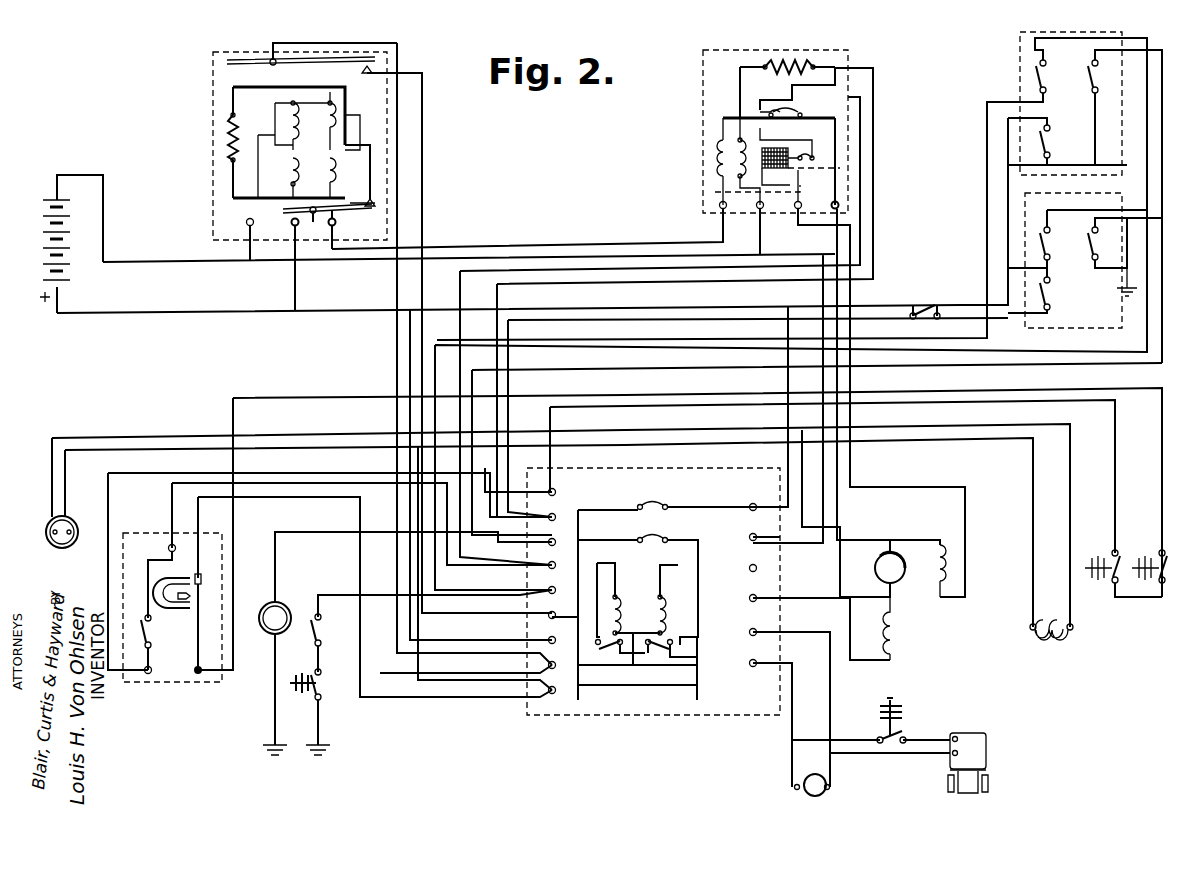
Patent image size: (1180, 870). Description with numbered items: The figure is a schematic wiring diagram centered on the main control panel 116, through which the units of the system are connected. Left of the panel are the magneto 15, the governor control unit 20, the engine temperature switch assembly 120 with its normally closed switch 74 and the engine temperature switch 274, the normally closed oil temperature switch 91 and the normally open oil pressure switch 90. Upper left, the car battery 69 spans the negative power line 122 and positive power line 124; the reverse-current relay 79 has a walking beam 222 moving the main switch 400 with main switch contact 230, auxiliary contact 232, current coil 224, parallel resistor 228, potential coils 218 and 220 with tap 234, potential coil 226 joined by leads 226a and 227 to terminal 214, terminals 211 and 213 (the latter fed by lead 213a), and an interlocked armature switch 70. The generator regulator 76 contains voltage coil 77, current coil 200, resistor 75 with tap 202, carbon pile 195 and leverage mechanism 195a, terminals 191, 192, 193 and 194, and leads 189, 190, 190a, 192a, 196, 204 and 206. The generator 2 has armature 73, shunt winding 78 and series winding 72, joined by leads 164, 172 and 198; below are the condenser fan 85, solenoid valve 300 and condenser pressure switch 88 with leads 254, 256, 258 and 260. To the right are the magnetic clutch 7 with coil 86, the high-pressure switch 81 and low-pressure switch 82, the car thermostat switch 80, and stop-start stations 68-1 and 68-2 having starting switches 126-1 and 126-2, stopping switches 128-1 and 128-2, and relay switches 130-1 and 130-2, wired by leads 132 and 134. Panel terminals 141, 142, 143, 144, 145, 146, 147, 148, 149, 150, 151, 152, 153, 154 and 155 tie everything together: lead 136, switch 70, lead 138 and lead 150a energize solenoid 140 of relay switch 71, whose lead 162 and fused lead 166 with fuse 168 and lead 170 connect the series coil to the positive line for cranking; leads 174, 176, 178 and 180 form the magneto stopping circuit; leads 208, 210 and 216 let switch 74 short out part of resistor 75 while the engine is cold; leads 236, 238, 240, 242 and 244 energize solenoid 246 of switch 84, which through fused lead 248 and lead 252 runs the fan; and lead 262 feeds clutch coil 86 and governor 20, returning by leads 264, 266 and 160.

The generator 2 is at (936, 616).
The magnetic clutch 7 is at (1082, 644).
The magneto 15 is at (280, 602).
The governor control unit 20 is at (73, 520).
The stop-start station 68-1 is at (1012, 72).
The stop-start station 68-2 is at (1015, 218).
The car battery 69 is at (41, 188).
The armature switch 70 is at (335, 71).
The relay switch 71 is at (605, 640).
The series winding 72 is at (896, 630).
The armature 73 is at (897, 563).
The normally closed switch 74 is at (150, 630).
The resistor 75 is at (795, 62).
The generator regulator 76 is at (695, 112).
The voltage coil 77 is at (715, 126).
The shunt winding 78 is at (950, 565).
The reverse-current relay 79 is at (203, 116).
The car thermostat switch 80 is at (918, 312).
The high-pressure switch 81 is at (1110, 552).
The low-pressure switch 82 is at (1158, 552).
The switch 84 is at (672, 636).
The condenser fan 85 is at (783, 773).
The coil 86 is at (1048, 636).
The condenser pressure switch 88 is at (905, 738).
The oil pressure switch 90 is at (312, 672).
The oil temperature switch 91 is at (314, 620).
The main control panel 116 is at (550, 726).
The engine temperature switch assembly 120 is at (150, 683).
The negative power line 122 is at (180, 263).
The positive power line 124 is at (178, 314).
The starting switch 126-1 is at (1048, 75).
The starting switch 126-2 is at (1040, 242).
The stopping switch 128-1 is at (1050, 145).
The stopping switch 128-2 is at (1050, 293).
The relay switch 130-1 is at (1095, 75).
The relay switch 130-2 is at (1095, 245).
The lead 132 is at (990, 122).
The lead 134 is at (410, 352).
The lead 136 is at (397, 61).
The lead 138 is at (422, 95).
The solenoid 140 is at (618, 600).
The terminal 141 is at (753, 504).
The terminal 142 is at (752, 534).
The panel terminal 143 is at (752, 566).
The terminal 144 is at (761, 589).
The terminal 145 is at (751, 624).
The terminal 146 is at (766, 654).
The terminal 147 is at (556, 693).
The terminal 148 is at (566, 658).
The terminal 149 is at (566, 633).
The terminal 150 is at (541, 622).
The lead 150a is at (600, 566).
The terminal 151 is at (566, 597).
The terminal 152 is at (566, 573).
The terminal 153 is at (566, 549).
The terminal 154 is at (566, 525).
The terminal 155 is at (557, 492).
The lead 160 is at (722, 540).
The lead 162 is at (579, 672).
The lead 164 is at (757, 596).
The lead 166 is at (615, 508).
The fuse 168 is at (657, 504).
The lead 170 is at (787, 450).
The lead 172 is at (856, 538).
The lead 174 is at (332, 592).
The lead 176 is at (633, 340).
The lead 178 is at (1115, 365).
The lead 180 is at (278, 565).
The lead 189 is at (798, 228).
The fused lead 190 is at (798, 110).
The lead 190a is at (760, 130).
The regulator terminal 191 is at (727, 203).
The terminal 192 is at (763, 204).
The conductor 192a is at (780, 252).
The current regulator terminal 193 is at (828, 200).
The terminal 194 is at (768, 179).
The variable resistance carbon pile 195 is at (778, 152).
The leverage mechanism 195a is at (848, 162).
The lead 196 is at (838, 220).
The lead 198 is at (880, 578).
The current coil 200 is at (735, 150).
The tap 202 is at (795, 75).
The lead 204 is at (723, 228).
The lead 206 is at (498, 274).
The lead 208 is at (297, 473).
The lead 210 is at (172, 495).
The terminal 211 is at (240, 240).
The reverse current relay terminal 213 is at (280, 240).
The lead 213a is at (296, 280).
The terminal 214 is at (348, 229).
The lead 216 is at (462, 272).
The potential coil 218 is at (311, 173).
The potential coil 220 is at (289, 141).
The walking beam 222 is at (327, 219).
The current coil 224 is at (367, 164).
The potential coil 226 is at (302, 126).
The lead 226a is at (258, 160).
The lead 227 is at (307, 189).
The resistor 228 is at (240, 122).
The main switch contact 230 is at (362, 200).
The auxiliary contact 232 is at (371, 198).
The tap 234 is at (350, 121).
The lead 236 is at (760, 318).
The lead 238 is at (553, 462).
The lead 240 is at (263, 396).
The lead 242 is at (290, 497).
The lead 244 is at (614, 706).
The solenoid 246 is at (665, 600).
The fused lead 248 is at (598, 540).
The lead 252 is at (700, 658).
The lead 254 is at (768, 630).
The lead 256 is at (800, 545).
The lead 258 is at (856, 758).
The lead 260 is at (850, 738).
The lead 262 is at (108, 436).
The lead 264 is at (612, 445).
The lead 266 is at (66, 494).
The engine temperature switch 274 is at (211, 578).
The solenoid valve 300 is at (998, 738).
The main switch 400 is at (395, 219).